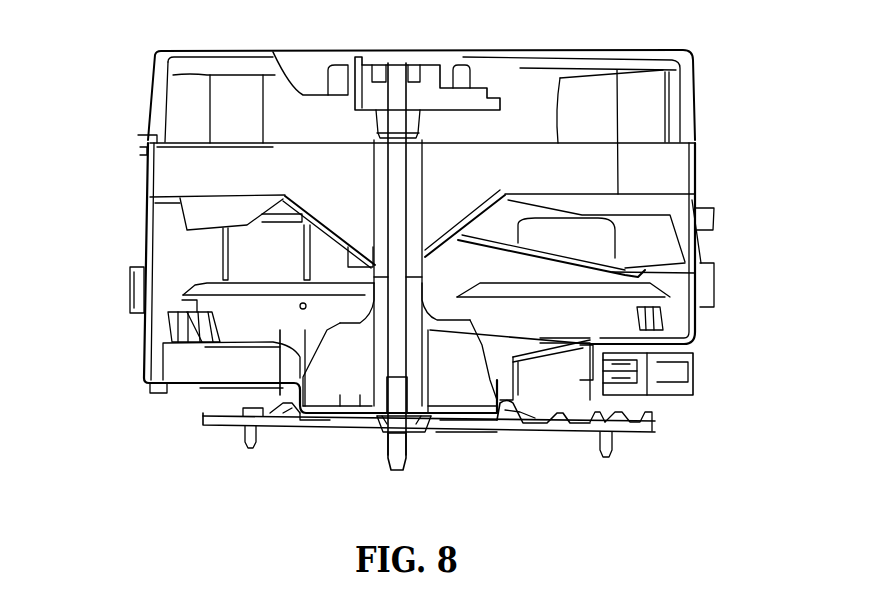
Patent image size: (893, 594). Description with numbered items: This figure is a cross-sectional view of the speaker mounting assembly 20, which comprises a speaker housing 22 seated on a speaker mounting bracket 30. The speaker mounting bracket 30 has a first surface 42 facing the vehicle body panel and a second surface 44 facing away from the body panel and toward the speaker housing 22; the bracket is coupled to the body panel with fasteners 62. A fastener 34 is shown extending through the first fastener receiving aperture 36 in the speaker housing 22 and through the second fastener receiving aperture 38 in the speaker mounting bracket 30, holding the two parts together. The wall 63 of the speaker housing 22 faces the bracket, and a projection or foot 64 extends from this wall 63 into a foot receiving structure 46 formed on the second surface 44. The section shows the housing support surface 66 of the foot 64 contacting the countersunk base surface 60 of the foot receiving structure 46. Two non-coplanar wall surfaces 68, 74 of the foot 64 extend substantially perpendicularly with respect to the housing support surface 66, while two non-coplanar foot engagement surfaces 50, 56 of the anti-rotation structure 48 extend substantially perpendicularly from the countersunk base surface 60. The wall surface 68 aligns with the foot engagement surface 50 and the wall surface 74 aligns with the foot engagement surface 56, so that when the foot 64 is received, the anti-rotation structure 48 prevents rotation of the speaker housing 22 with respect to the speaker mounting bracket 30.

The speaker mounting assembly 20 is at (720, 111).
The speaker housing 22 is at (147, 108).
The speaker mounting bracket 30 is at (200, 422).
The fastener 34 is at (378, 72).
The first fastener receiving aperture 36 is at (415, 183).
The second fastener receiving aperture 38 is at (384, 427).
The first surface 42 is at (228, 425).
The second surface 44 is at (592, 408).
The foot receiving structure 46 is at (430, 422).
The anti-rotation structure 48 is at (548, 395).
The first foot engaging surface 50 is at (280, 432).
The fourth foot engaging surface 56 is at (504, 406).
The countersunk base surface 60 is at (458, 420).
The fasteners 62 is at (249, 448).
The wall 63 is at (640, 394).
The foot 64 is at (350, 402).
The housing support surface 66 is at (303, 427).
The wall surface 68 is at (278, 383).
The wall surface 74 is at (524, 404).